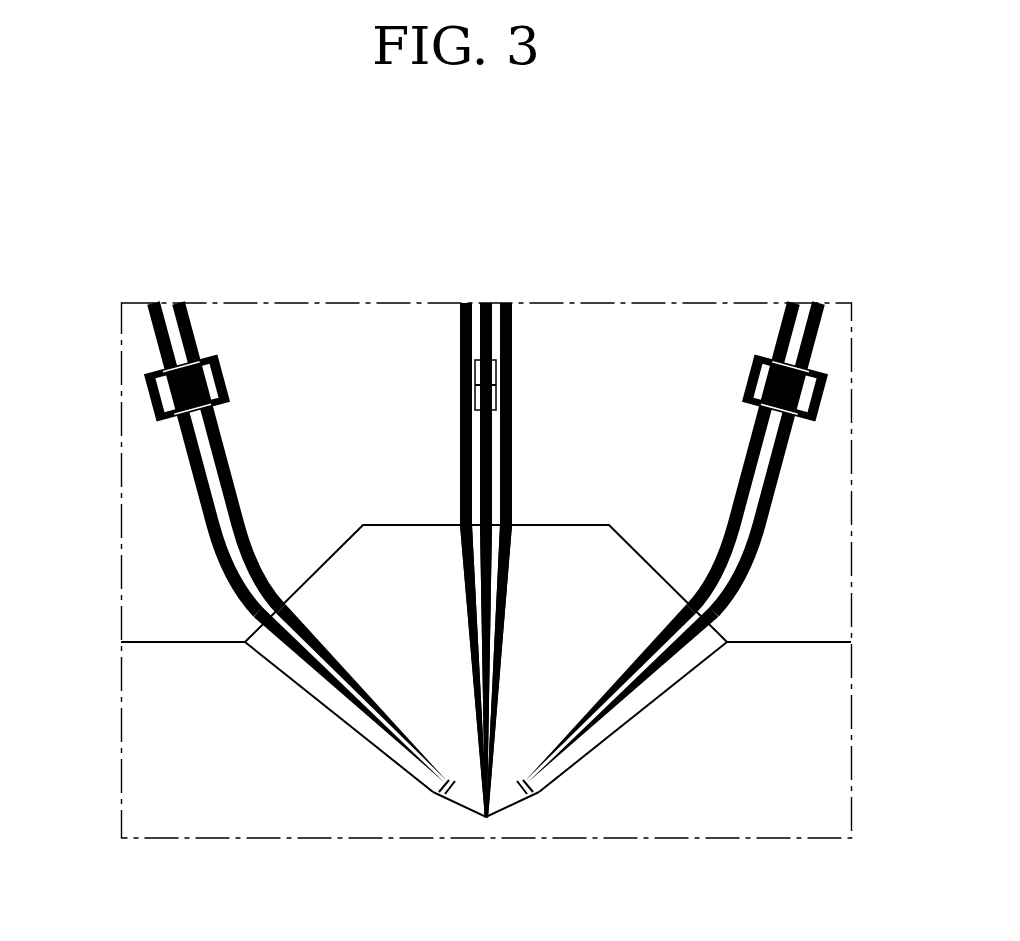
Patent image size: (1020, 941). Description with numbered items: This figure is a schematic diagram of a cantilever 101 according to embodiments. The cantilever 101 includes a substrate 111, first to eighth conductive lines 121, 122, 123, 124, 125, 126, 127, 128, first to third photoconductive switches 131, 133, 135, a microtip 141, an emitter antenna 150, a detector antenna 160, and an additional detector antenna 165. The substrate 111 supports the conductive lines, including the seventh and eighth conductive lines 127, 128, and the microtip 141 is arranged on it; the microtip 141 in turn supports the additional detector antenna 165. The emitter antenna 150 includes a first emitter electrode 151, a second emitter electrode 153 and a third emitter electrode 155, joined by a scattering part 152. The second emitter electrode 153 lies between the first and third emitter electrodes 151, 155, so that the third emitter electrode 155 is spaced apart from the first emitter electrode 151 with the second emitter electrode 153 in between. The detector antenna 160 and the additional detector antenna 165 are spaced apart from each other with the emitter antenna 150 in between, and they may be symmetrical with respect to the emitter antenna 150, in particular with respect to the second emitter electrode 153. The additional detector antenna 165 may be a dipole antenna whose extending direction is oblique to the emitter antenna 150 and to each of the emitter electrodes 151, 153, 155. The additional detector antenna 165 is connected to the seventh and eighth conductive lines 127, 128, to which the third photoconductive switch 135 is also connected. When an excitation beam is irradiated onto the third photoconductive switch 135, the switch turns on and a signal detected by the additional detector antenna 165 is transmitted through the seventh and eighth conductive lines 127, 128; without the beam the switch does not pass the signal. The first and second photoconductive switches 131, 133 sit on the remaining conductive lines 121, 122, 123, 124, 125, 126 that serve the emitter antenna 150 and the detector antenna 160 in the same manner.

The cantilever 101 is at (160, 257).
The substrate 111 is at (143, 608).
The first conductive line 121 is at (512, 377).
The second conductive line 122 is at (493, 333).
The third conductive line 123 is at (460, 345).
The fourth conductive line 124 is at (477, 560).
The fifth conductive line 125 is at (157, 335).
The sixth conductive line 126 is at (188, 338).
The seventh conductive line 127 is at (815, 340).
The eighth conductive line 128 is at (782, 333).
The first photoconductive switch 131 is at (497, 385).
The second photoconductive switch 133 is at (138, 408).
The third photoconductive switch 135 is at (727, 406).
The microtip 141 is at (472, 798).
The emitter antenna 150 is at (595, 679).
The first emitter electrode 151 is at (494, 638).
The scattering part 152 is at (505, 818).
The second emitter electrode 153 is at (490, 677).
The third emitter electrode 155 is at (483, 710).
The detector antenna 160 is at (392, 758).
The additional detector antenna 165 is at (689, 687).